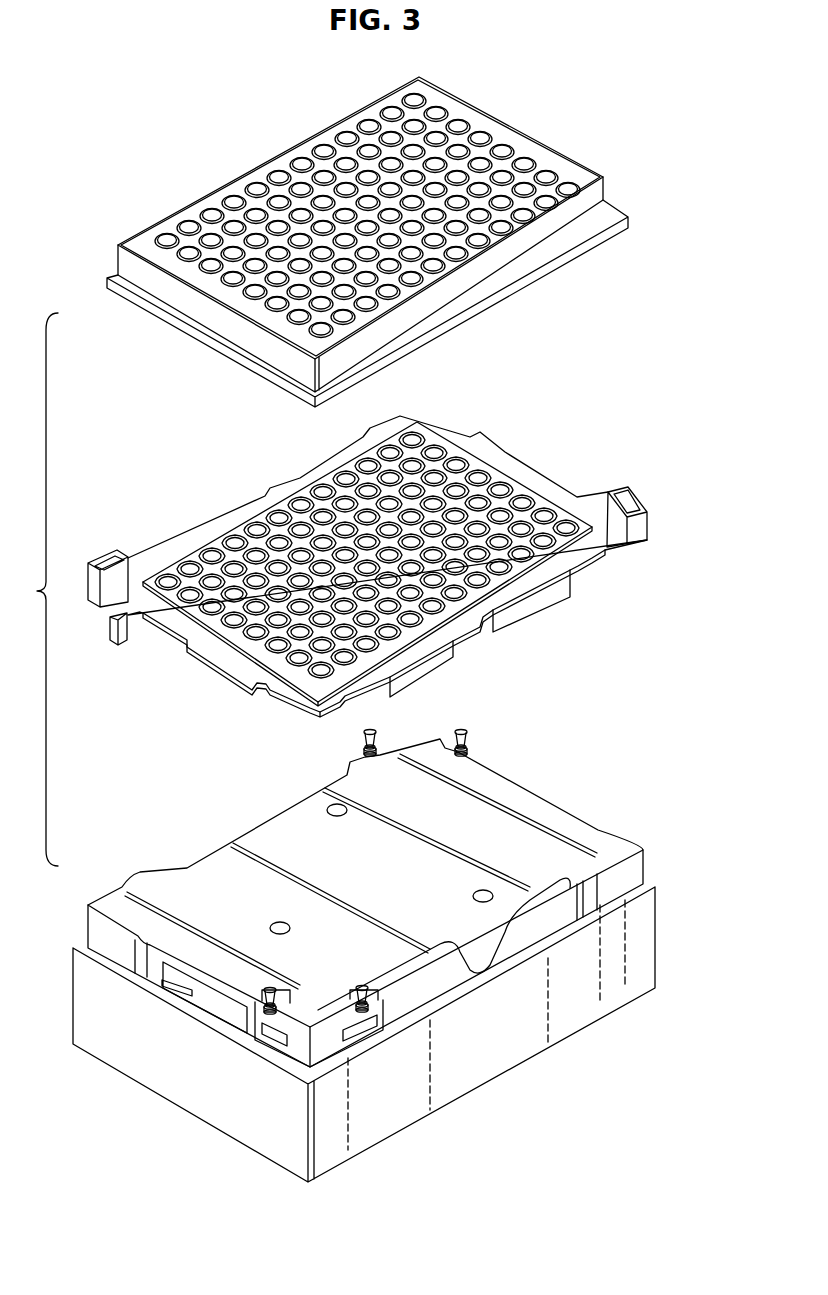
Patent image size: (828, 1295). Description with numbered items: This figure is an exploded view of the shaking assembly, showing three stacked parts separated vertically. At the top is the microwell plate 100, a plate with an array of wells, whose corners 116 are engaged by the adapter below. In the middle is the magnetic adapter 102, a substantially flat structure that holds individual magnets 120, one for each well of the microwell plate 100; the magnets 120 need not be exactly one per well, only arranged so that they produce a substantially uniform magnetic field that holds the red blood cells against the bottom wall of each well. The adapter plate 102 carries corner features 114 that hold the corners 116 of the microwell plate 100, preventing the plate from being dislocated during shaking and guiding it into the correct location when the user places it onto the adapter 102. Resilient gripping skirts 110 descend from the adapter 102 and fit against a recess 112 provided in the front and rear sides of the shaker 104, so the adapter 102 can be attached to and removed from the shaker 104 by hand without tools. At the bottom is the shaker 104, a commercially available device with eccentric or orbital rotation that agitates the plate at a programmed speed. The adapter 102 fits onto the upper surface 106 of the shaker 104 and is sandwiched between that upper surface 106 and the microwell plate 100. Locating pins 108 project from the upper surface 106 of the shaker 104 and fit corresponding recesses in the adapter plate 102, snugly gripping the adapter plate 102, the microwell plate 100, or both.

The microwell plate 100 is at (579, 175).
The magnetic adapter 102 is at (583, 490).
The shaker 104 is at (648, 948).
The upper surface 106 is at (365, 903).
The locating pins 108 is at (362, 733).
The resilient gripping skirts 110 is at (542, 613).
The recess 112 is at (420, 970).
The corner features 114 is at (125, 553).
The corners 116 is at (115, 262).
The magnets 120 is at (505, 490).